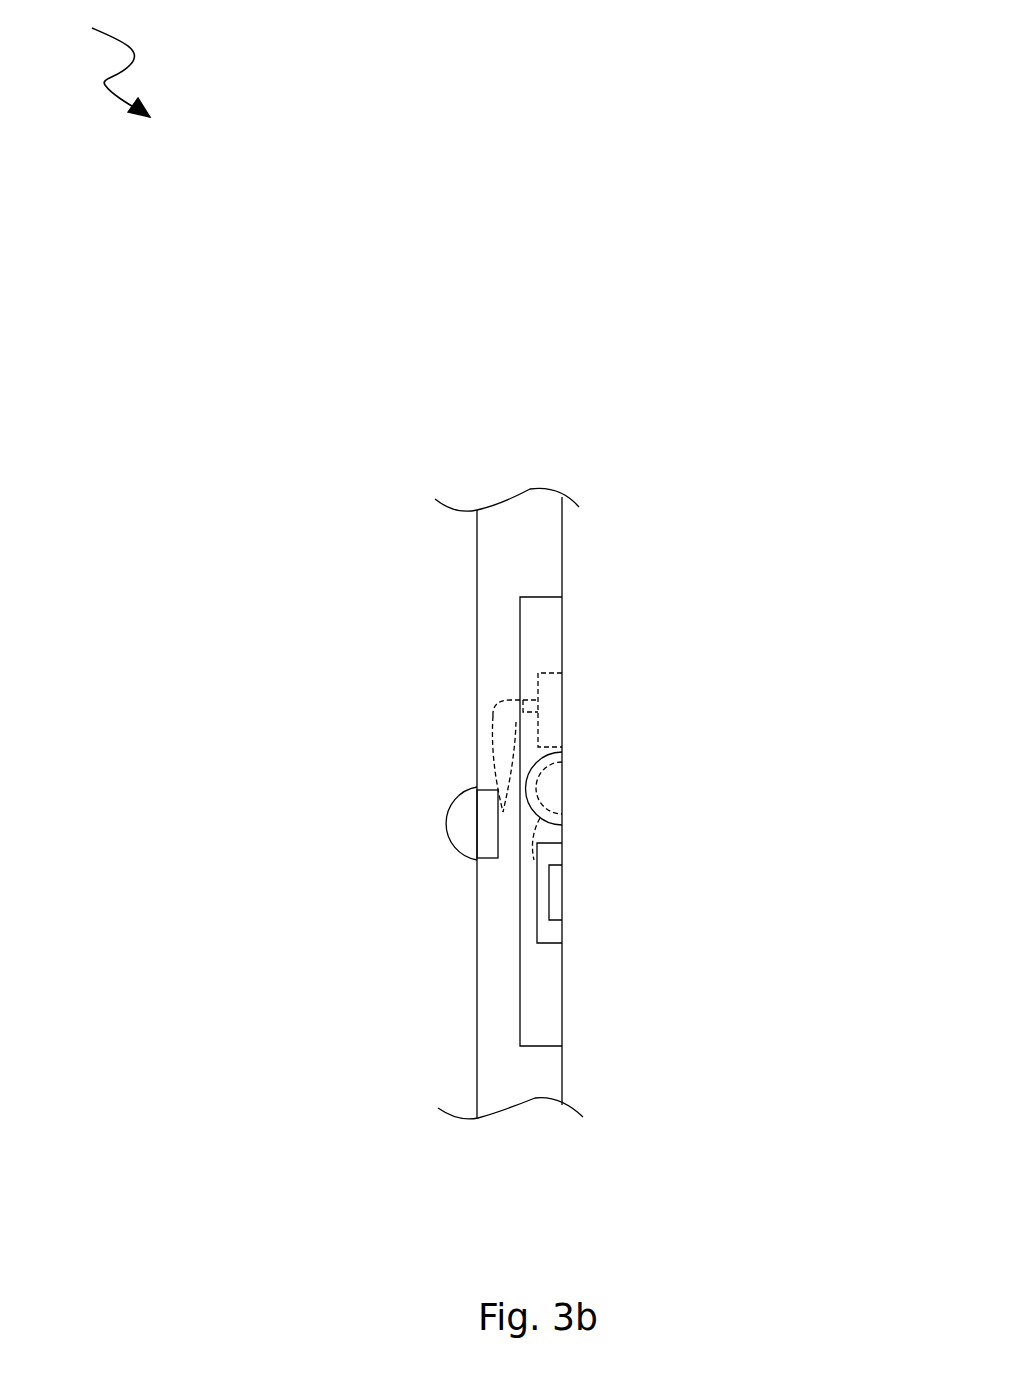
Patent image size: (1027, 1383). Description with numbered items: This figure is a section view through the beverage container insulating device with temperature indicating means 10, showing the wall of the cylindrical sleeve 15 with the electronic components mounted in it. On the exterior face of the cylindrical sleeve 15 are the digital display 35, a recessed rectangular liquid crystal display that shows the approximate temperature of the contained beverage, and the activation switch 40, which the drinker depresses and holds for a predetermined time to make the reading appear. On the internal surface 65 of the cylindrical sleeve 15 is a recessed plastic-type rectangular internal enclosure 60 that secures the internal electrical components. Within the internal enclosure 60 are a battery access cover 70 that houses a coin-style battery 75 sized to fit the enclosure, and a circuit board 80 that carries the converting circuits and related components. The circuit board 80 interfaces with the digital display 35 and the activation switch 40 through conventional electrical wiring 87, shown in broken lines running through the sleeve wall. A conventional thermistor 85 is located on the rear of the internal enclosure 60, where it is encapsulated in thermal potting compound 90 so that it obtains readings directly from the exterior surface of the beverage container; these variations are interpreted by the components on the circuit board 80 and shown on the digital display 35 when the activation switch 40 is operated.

The beverage container insulating device with temperature indicating means 10 is at (104, 63).
The cylindrical sleeve 15 is at (485, 557).
The internal surface 65 is at (562, 545).
The internal enclosure 60 is at (547, 637).
The circuit board 80 is at (558, 703).
The electrical wiring 87 is at (517, 722).
The battery access cover 70 is at (560, 758).
The battery 75 is at (557, 792).
The activation switch 40 is at (452, 808).
The digital display 35 is at (488, 850).
The thermal potting compound 90 is at (557, 857).
The thermistor 85 is at (557, 902).